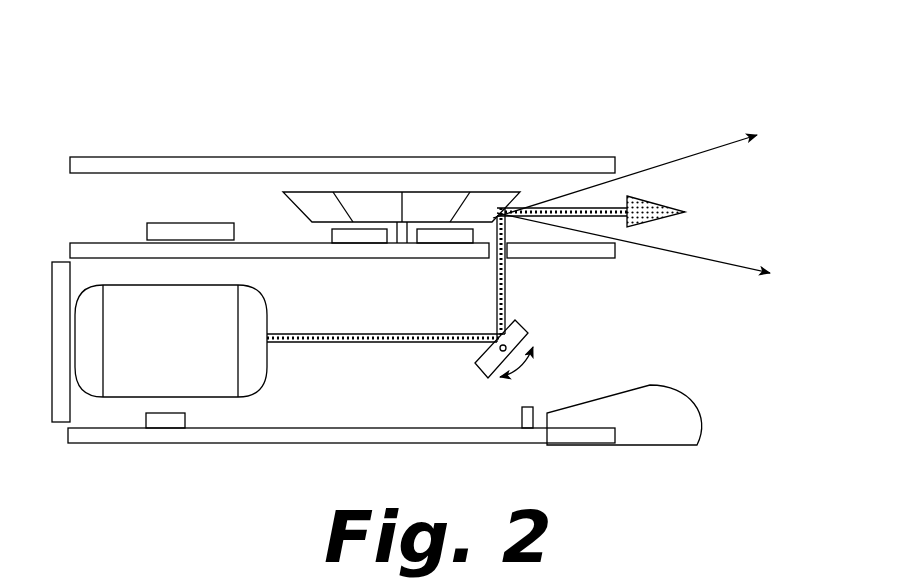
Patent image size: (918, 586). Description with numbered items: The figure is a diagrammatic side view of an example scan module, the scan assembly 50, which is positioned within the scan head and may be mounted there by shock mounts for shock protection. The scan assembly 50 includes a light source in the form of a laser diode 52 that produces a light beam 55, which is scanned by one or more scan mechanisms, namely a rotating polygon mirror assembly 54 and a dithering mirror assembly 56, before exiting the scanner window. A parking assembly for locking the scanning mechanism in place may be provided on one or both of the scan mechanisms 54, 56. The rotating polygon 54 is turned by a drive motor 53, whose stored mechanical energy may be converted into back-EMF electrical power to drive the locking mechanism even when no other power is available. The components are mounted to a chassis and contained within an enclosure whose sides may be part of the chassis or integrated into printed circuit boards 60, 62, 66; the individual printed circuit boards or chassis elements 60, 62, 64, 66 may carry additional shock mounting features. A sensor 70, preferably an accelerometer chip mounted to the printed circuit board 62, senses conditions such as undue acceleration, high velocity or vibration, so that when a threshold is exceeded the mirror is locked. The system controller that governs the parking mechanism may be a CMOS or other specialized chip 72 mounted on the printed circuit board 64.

The scan assembly 50 is at (538, 70).
The laser diode 52 is at (267, 367).
The drive motor 53 is at (360, 243).
The rotating polygon mirror assembly 54 is at (317, 192).
The light beam 55 is at (392, 334).
The dithering mirror assembly 56 is at (528, 330).
The printed circuit board 60 is at (55, 425).
The printed circuit board 62 is at (210, 443).
The printed circuit board 64 is at (117, 243).
The printed circuit board 66 is at (122, 157).
The sensor 70 is at (145, 421).
The specialized chip 72 is at (202, 223).